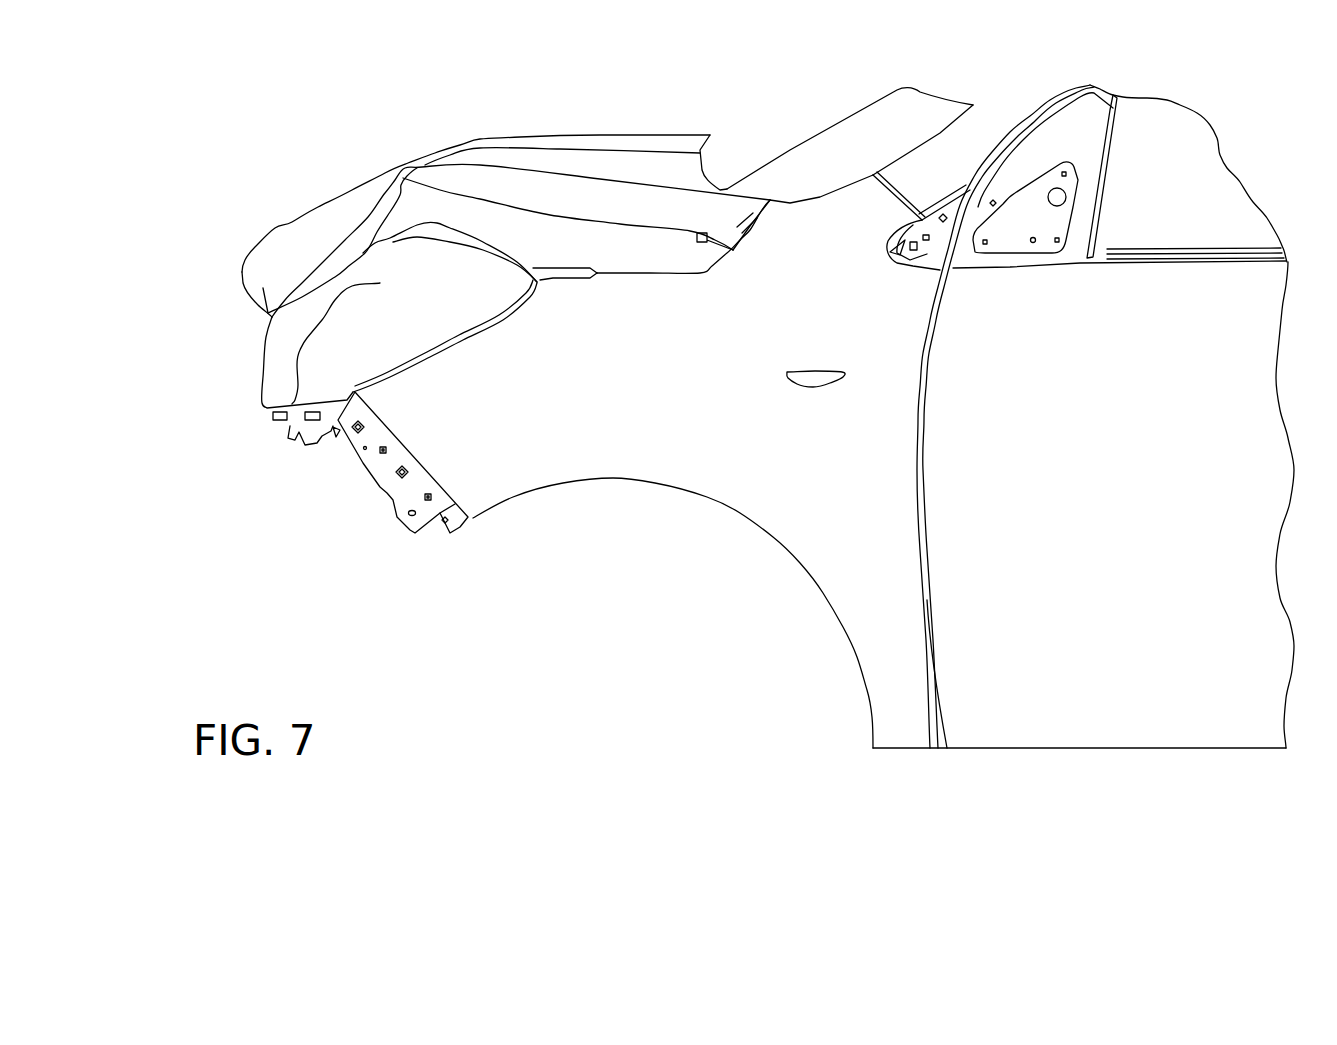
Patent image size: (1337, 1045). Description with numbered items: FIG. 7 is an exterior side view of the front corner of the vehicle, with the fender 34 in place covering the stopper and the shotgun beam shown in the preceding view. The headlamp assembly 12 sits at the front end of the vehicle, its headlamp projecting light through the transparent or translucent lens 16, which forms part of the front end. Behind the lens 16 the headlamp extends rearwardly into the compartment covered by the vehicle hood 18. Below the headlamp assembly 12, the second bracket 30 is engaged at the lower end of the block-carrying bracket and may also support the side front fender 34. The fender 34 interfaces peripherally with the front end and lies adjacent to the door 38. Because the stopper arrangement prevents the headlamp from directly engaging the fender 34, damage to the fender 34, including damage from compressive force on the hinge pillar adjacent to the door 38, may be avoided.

The headlamp assembly 12 is at (225, 319).
The lens 16 is at (263, 355).
The vehicle hood 18 is at (503, 135).
The bracket 30 is at (445, 522).
The fender 34 is at (648, 438).
The door 38 is at (982, 732).